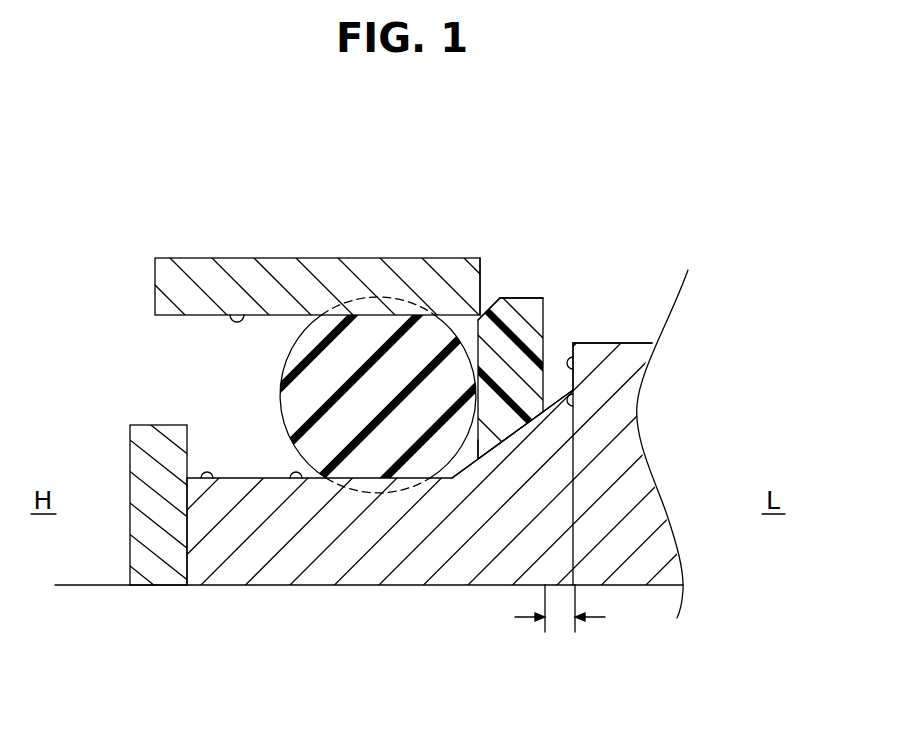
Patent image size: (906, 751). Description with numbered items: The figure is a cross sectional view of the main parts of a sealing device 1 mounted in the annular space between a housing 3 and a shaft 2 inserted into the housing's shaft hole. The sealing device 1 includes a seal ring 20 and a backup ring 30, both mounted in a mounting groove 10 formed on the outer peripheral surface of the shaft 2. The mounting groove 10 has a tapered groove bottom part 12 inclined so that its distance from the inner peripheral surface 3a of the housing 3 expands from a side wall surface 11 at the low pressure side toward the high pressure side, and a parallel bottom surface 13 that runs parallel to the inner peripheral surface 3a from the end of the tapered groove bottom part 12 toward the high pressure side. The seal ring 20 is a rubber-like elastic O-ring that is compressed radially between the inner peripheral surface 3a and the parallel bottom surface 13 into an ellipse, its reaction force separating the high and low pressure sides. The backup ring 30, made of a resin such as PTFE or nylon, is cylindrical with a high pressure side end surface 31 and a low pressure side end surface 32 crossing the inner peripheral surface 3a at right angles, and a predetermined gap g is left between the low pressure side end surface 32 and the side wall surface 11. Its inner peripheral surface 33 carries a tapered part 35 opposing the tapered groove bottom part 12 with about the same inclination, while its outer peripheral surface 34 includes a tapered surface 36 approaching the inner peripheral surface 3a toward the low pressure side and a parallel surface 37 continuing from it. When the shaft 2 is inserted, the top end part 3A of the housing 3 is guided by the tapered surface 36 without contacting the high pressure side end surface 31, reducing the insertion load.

The sealing device 1 is at (172, 358).
The shaft 2 is at (256, 556).
The housing 3 is at (193, 270).
The inner peripheral surface 3a is at (237, 313).
The top end part 3A is at (480, 287).
The mounting groove 10 is at (300, 480).
The side wall surface 11 is at (600, 350).
The tapered groove bottom part 12 is at (575, 387).
The parallel bottom surface 13 is at (213, 480).
The seal ring 20 is at (323, 365).
The backup ring 30 is at (518, 360).
The high pressure side end surface 31 is at (478, 459).
The low pressure side end surface 32 is at (544, 327).
The inner peripheral surface 33 is at (541, 420).
The outer peripheral surface 34 is at (527, 298).
The tapered part 35 is at (516, 432).
The tapered surface 36 is at (499, 300).
The parallel surface 37 is at (537, 298).
The gap g is at (560, 616).